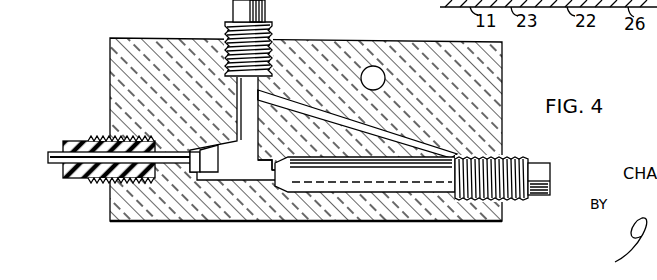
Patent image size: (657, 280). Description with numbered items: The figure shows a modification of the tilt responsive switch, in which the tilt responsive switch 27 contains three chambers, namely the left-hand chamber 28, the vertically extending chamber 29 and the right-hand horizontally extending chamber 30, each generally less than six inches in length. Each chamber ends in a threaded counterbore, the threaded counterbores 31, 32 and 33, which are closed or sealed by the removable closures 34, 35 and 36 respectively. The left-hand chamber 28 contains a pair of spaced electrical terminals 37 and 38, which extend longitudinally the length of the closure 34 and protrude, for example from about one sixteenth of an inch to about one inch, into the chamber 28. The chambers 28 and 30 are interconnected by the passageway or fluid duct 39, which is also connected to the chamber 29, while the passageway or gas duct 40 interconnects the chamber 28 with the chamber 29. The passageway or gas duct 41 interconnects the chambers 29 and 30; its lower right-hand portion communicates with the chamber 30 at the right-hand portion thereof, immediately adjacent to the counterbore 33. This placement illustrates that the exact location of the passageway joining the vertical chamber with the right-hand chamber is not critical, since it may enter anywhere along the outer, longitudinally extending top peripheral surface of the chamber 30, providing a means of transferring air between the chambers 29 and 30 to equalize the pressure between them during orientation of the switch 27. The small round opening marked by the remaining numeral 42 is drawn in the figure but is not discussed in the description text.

The tilt responsive switch 27 is at (150, 36).
The left-hand chamber 28 is at (192, 174).
The chamber 29 is at (259, 103).
The right-hand chamber 30 is at (363, 178).
The threaded counterbore 31 is at (127, 182).
The threaded counterbore 32 is at (268, 45).
The threaded counterbore 33 is at (491, 156).
The removable closure 34 is at (98, 142).
The removable closure 35 is at (229, 26).
The removable closure 36 is at (515, 201).
The electrical terminal 37 is at (170, 151).
The electrical terminal 38 is at (190, 162).
The fluid duct 39 is at (268, 174).
The gas duct 40 is at (247, 172).
The gas duct 41 is at (312, 105).
The hole 42 is at (383, 68).